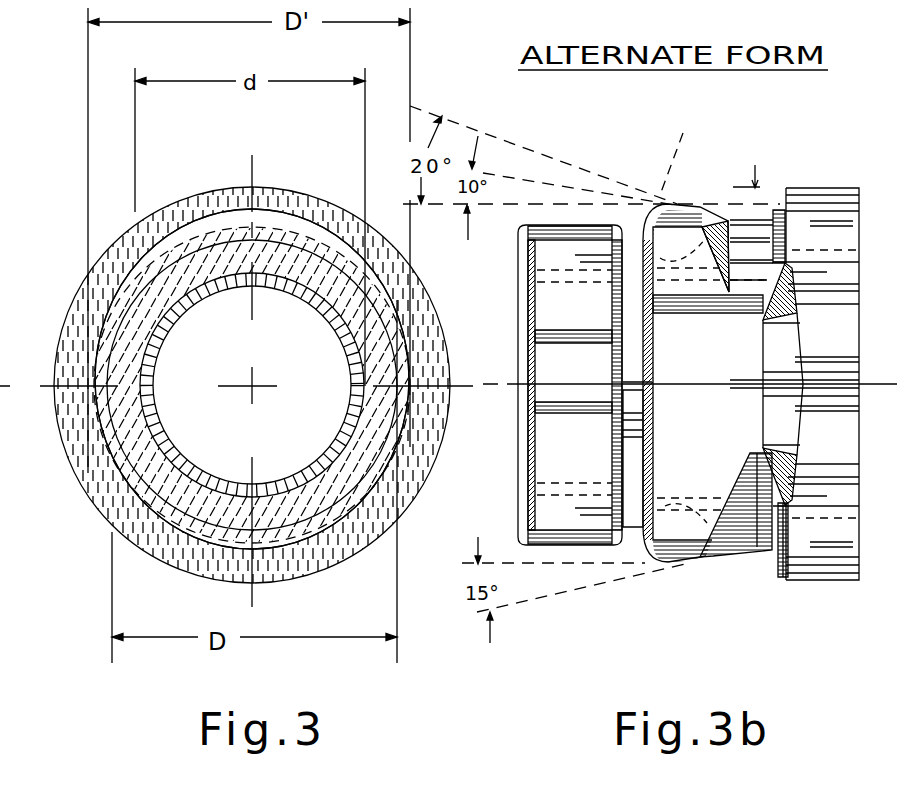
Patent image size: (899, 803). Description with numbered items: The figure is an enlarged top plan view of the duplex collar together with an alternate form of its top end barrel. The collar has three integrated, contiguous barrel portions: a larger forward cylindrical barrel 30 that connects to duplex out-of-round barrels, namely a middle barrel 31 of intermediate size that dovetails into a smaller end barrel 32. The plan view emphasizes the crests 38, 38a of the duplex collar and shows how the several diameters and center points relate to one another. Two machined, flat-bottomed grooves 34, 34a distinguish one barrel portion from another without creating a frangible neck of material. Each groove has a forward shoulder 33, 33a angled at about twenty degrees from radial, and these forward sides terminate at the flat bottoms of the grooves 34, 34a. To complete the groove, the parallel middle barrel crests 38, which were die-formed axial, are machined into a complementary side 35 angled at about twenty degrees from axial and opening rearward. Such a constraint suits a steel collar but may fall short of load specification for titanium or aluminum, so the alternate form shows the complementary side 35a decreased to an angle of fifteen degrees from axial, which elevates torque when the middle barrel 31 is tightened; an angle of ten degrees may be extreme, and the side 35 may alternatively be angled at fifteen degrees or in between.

In FIG. 3, the cylindrical barrel 30 is at (98, 478).
In FIG. 3, the middle barrel 31 is at (118, 320).
In FIG. 3, the end barrel 32 is at (282, 263).
In FIG. 3, the collar crests 38 is at (250, 207).
In FIG. 3, the collar crest 38a is at (252, 548).
In FIG. 3B, the forward shoulder 33 is at (782, 563).
In FIG. 3B, the forward shoulder 33a is at (643, 232).
In FIG. 3B, the flat-bottomed groove 34 is at (755, 192).
In FIG. 3B, the flat-bottomed groove 34a is at (634, 530).
In FIG. 3B, the complementary side 35 is at (723, 213).
In FIG. 3B, the complementary side 35a is at (710, 553).